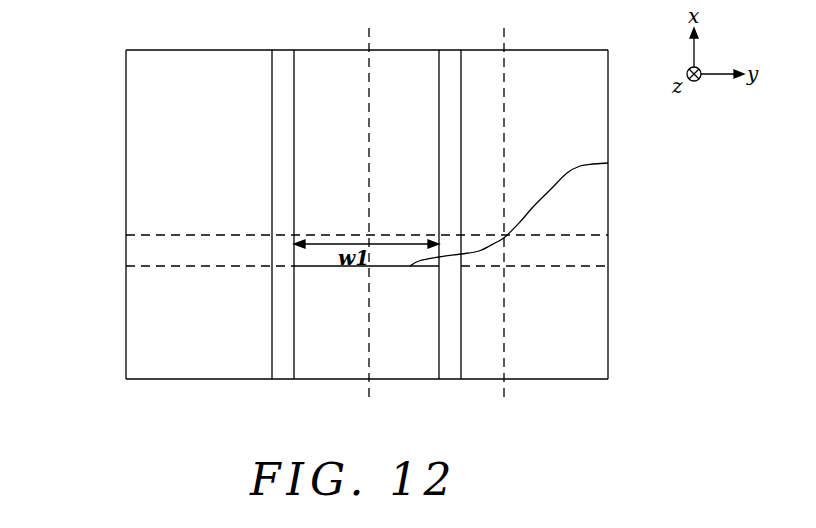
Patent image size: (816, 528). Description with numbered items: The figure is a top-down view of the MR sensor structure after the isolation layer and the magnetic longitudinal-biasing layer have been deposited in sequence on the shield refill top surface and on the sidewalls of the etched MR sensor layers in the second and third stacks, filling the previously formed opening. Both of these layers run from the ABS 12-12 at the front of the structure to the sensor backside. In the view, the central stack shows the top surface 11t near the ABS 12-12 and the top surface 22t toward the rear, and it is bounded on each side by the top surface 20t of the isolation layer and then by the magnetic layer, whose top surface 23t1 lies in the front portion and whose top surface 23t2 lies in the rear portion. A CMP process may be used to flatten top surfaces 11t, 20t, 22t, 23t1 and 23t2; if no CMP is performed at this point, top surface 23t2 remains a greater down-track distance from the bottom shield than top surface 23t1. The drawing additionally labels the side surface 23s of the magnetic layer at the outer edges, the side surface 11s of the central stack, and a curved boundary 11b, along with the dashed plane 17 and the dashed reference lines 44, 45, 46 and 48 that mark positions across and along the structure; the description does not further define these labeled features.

The top edge line 48 is at (126, 50).
The ABS 12 is at (126, 379).
The side surface of shield layer 23s is at (126, 100).
The top surface of magnetic layer (back portion) 23t2 is at (143, 154).
The top surface of magnetic layer (front portion) 23t1 is at (142, 338).
The reference plane line 17 is at (126, 235).
The reference line 46 is at (126, 266).
The reference line 44 is at (368, 221).
The reference line 45 is at (508, 221).
The top surface 22t is at (316, 67).
The bottom surface boundary of pole layer 11b is at (608, 163).
The top surface of isolation layer 20t is at (282, 365).
The side surface of pole layer 11s is at (293, 352).
The top surface 11t is at (400, 368).